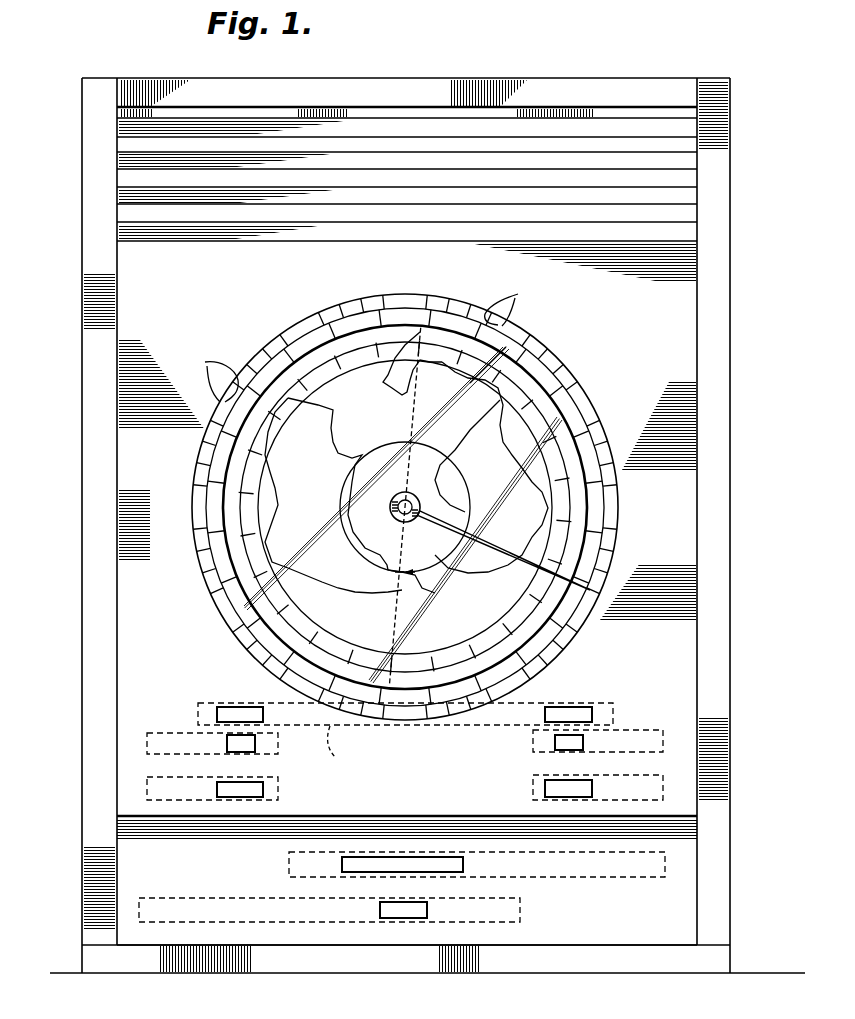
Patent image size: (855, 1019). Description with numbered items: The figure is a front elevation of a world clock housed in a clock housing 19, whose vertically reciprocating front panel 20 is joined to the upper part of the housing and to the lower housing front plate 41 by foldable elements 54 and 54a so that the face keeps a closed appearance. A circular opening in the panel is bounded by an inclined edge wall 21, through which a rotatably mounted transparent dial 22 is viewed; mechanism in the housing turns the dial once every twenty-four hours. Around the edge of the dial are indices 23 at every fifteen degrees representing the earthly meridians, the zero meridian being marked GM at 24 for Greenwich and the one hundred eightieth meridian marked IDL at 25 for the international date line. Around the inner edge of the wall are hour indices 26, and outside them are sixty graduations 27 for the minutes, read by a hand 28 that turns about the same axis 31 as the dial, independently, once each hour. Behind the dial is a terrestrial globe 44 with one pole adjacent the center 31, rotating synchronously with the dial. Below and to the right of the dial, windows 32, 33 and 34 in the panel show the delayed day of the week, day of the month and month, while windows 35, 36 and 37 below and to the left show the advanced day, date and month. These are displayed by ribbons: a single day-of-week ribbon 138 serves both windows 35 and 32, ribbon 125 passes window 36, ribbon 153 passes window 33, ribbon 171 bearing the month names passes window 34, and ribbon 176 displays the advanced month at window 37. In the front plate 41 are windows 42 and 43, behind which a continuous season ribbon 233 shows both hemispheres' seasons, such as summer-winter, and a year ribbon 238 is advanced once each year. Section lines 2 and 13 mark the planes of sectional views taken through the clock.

The section line 2- 2 is at (406, 1017).
The section line 13- 13 is at (424, 610).
The clock housing 19 is at (737, 304).
The front panel 20 is at (400, 510).
The inclined edge wall 21 is at (569, 378).
The transparent dial 22 is at (243, 475).
The meridian indices 23 is at (588, 490).
The Greenwich meridian marking 24 is at (383, 326).
The international date line marking 25 is at (396, 680).
The hour indices 26 is at (589, 446).
The minute graduations 27 is at (362, 340).
The rotatable hand 28 is at (495, 549).
The axis 31 is at (407, 496).
The delayed day-of-week window 32 is at (592, 716).
The delayed day-of-month window 33 is at (585, 743).
The delayed month window 34 is at (592, 789).
The advanced day-of-week window 35 is at (218, 715).
The advanced day-of-month window 36 is at (227, 744).
The advanced month window 37 is at (217, 790).
The housing front plate 41 is at (660, 906).
The season window 42 is at (342, 864).
The year window 43 is at (427, 911).
The terrestrial globe 44 is at (326, 566).
The upper foldable element 54 is at (683, 161).
The lower foldable element 54a is at (670, 829).
The advanced day-of-month ribbon 125 is at (253, 746).
The day-of-week ribbon 138 is at (262, 707).
The delayed day-of-month ribbon 153 is at (555, 741).
The delayed month ribbon 171 is at (545, 789).
The advanced month ribbon 176 is at (263, 789).
The season ribbon 233 is at (463, 864).
The year ribbon 238 is at (380, 911).